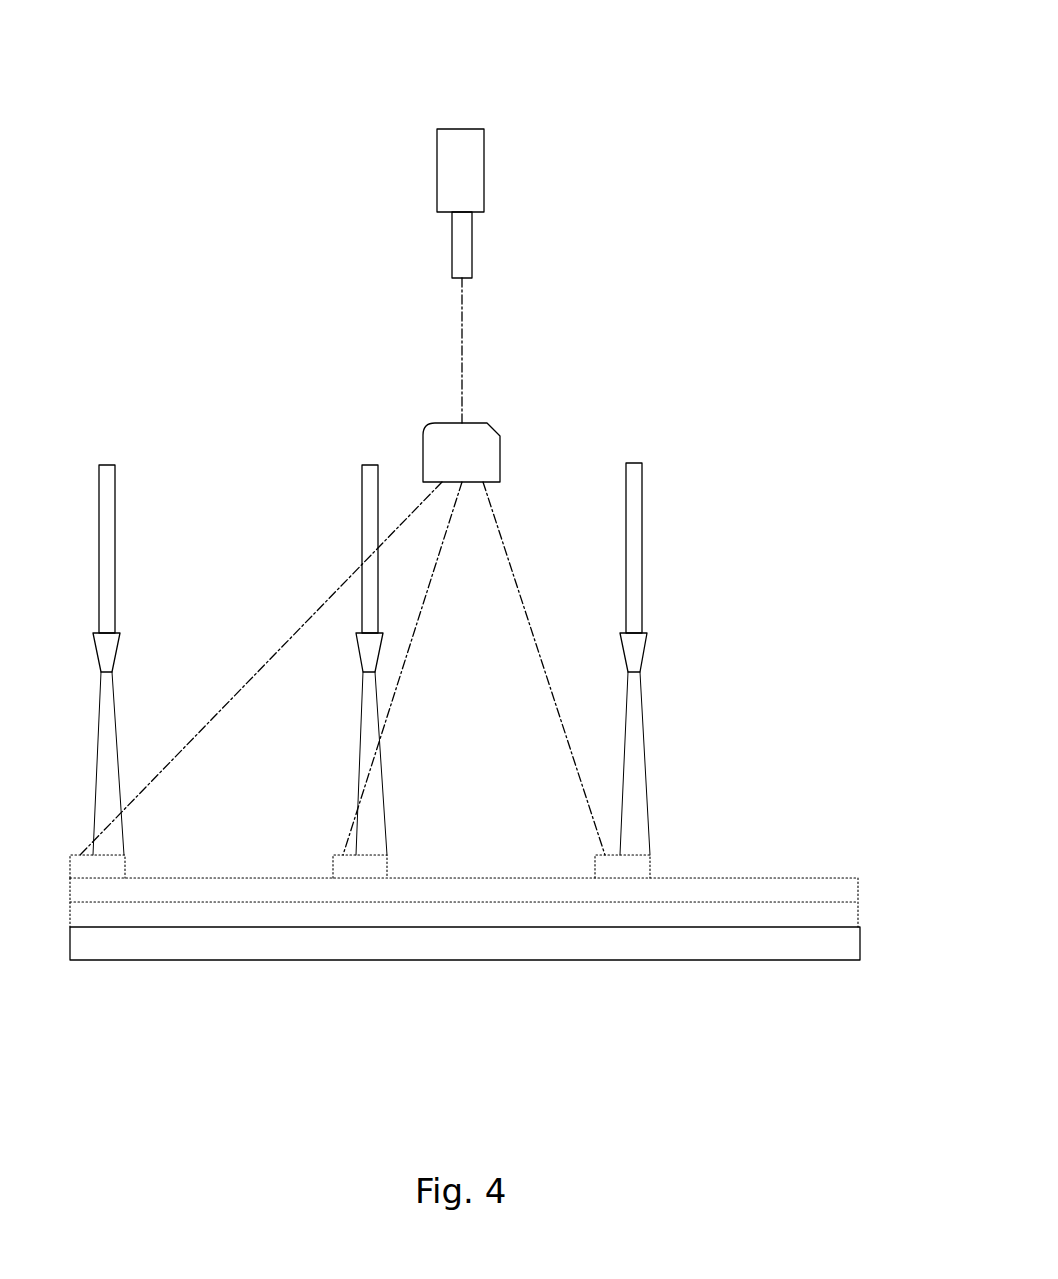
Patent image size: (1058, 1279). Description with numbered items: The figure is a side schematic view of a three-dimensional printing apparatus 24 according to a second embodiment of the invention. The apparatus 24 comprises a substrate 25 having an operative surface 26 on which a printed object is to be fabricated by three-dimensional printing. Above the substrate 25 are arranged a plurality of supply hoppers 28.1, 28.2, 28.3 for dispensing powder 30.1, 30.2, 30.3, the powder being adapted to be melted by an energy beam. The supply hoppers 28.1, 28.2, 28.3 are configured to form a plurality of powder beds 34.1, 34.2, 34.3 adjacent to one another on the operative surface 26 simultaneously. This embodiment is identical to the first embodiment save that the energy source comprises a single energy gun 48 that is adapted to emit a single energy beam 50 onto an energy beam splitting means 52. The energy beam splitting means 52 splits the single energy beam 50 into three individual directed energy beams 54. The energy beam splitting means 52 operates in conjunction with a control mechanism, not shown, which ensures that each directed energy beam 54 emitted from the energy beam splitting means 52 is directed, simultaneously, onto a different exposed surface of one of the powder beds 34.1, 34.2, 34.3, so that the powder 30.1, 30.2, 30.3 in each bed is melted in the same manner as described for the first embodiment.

The apparatus 24 is at (705, 103).
The substrate 25 is at (478, 945).
The operative surface 26 is at (800, 923).
The supply hopper 28.1 is at (107, 548).
The supply hopper 28.2 is at (367, 505).
The supply hopper 28.3 is at (633, 530).
The powder 30.1 is at (115, 732).
The powder 30.2 is at (380, 783).
The powder 30.3 is at (645, 783).
The powder bed 34.1 is at (245, 892).
The powder bed 34.2 is at (500, 893).
The powder bed 34.3 is at (765, 887).
The energy gun 48 is at (463, 129).
The energy beam 50 is at (462, 360).
The energy beam splitting means 52 is at (490, 437).
The directed energy beam 54 is at (398, 527).